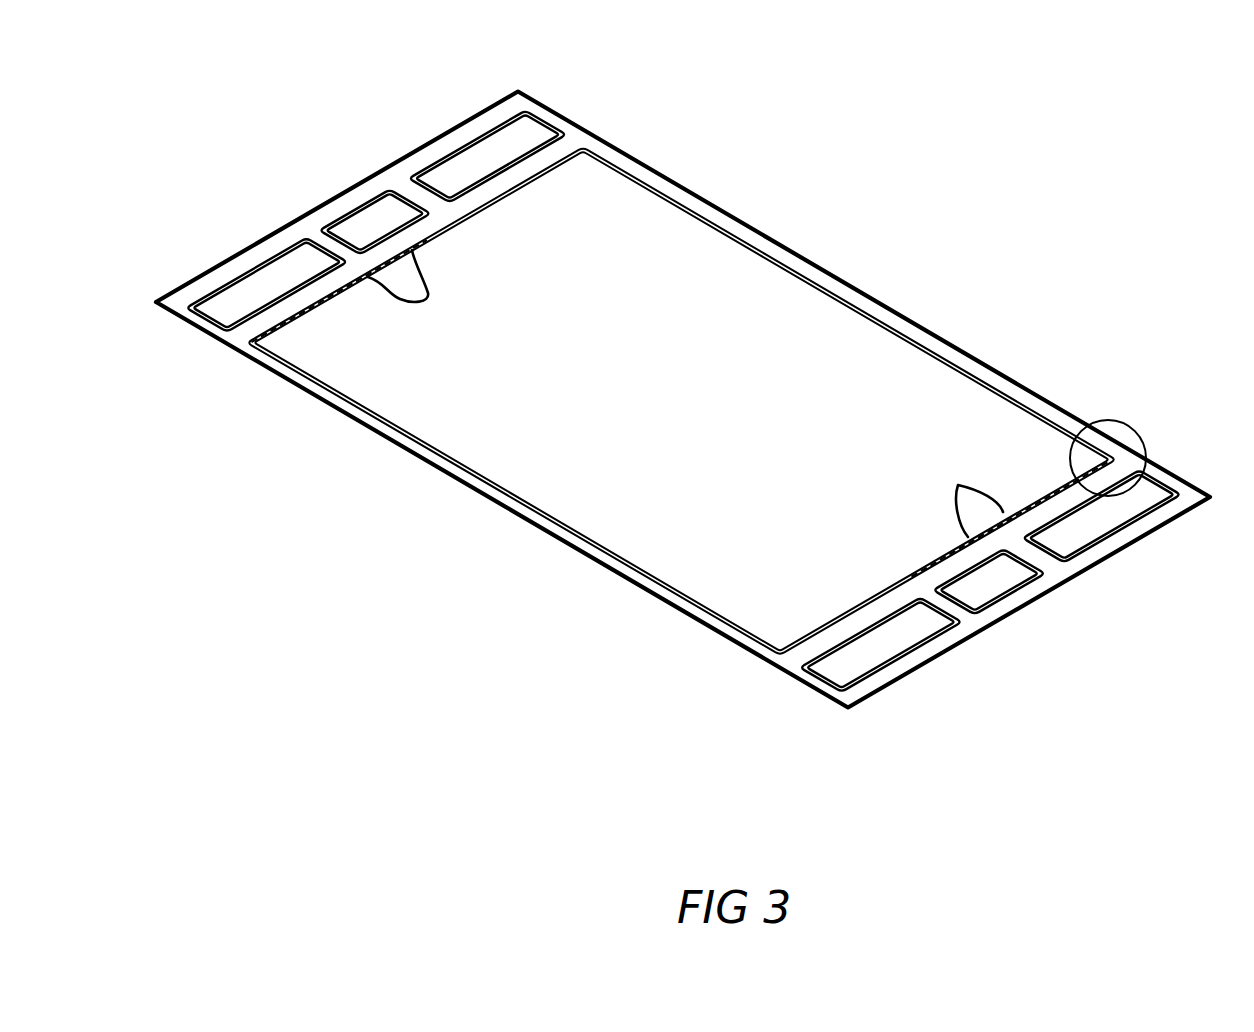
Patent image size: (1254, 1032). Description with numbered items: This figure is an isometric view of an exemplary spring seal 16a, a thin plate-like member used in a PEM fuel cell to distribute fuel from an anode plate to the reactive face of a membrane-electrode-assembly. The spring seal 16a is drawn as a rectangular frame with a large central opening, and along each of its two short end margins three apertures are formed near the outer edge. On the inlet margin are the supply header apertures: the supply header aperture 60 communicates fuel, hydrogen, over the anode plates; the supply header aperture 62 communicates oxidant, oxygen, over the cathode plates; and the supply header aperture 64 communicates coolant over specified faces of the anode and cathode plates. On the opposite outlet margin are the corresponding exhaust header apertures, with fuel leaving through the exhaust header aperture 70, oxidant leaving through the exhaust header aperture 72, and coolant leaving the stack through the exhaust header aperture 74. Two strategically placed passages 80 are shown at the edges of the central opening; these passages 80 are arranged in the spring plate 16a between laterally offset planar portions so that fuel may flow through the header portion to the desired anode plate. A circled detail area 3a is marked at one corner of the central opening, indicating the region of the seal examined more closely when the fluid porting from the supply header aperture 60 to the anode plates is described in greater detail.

The spring seal 16a is at (1047, 212).
The detail area 3a is at (1113, 448).
The supply header aperture 60 is at (358, 210).
The supply header aperture 62 is at (468, 146).
The supply header aperture 64 is at (250, 270).
The exhaust header aperture 70 is at (996, 592).
The exhaust header aperture 72 is at (892, 668).
The exhaust header aperture 74 is at (1100, 523).
The passage 80 is at (685, 393).